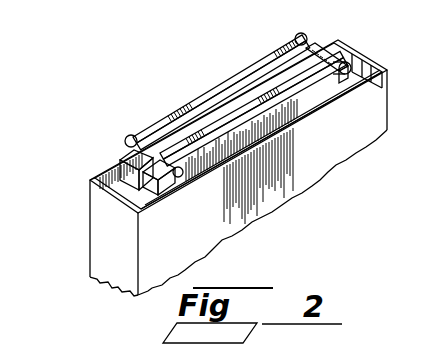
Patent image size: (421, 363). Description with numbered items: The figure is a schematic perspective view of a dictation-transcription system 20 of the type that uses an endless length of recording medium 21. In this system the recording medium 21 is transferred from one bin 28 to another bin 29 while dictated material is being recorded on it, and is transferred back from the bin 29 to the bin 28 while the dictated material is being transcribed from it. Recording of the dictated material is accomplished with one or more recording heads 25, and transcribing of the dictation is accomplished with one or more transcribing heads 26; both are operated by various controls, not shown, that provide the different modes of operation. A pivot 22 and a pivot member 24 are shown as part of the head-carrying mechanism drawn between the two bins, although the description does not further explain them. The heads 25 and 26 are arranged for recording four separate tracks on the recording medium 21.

The tray housing 20 is at (224, 154).
The recording medium 21 is at (163, 137).
The pivot pin 22 is at (183, 176).
The pivot cylinder 24 is at (348, 74).
The recording head 25 is at (130, 158).
The transcribing head 26 is at (169, 193).
The bin 28 is at (106, 180).
The bin 29 is at (226, 148).